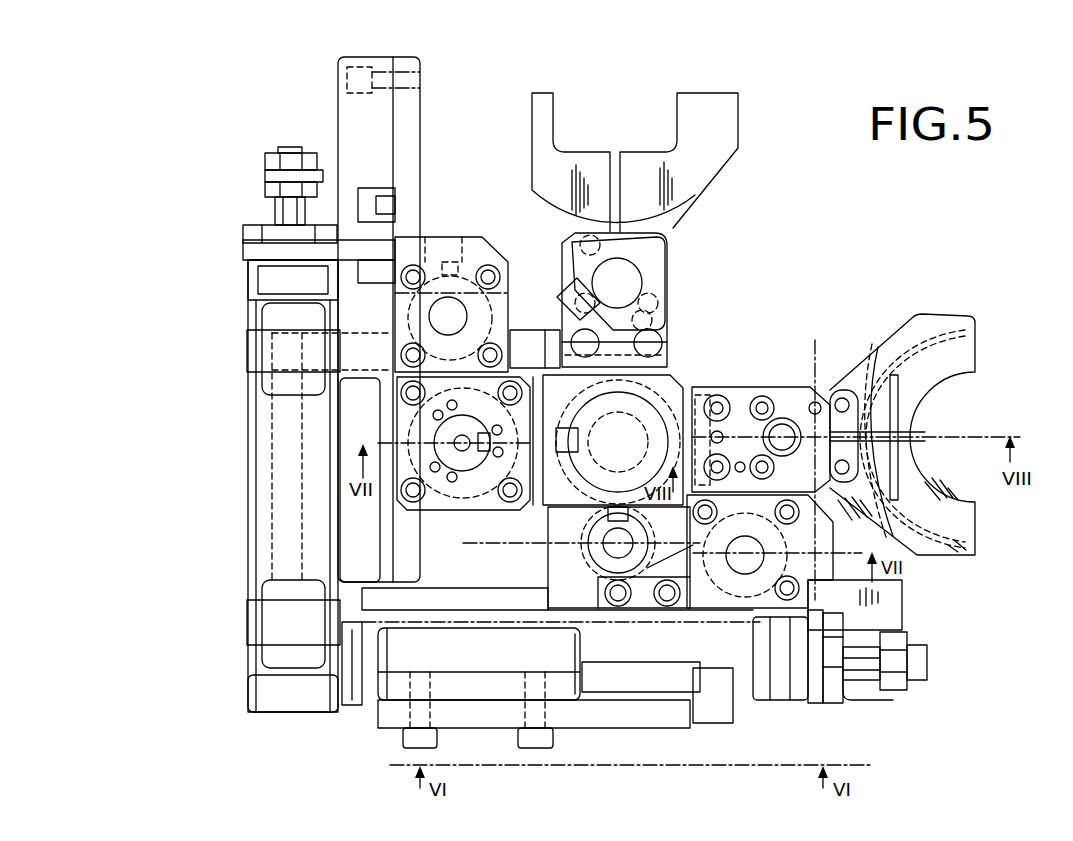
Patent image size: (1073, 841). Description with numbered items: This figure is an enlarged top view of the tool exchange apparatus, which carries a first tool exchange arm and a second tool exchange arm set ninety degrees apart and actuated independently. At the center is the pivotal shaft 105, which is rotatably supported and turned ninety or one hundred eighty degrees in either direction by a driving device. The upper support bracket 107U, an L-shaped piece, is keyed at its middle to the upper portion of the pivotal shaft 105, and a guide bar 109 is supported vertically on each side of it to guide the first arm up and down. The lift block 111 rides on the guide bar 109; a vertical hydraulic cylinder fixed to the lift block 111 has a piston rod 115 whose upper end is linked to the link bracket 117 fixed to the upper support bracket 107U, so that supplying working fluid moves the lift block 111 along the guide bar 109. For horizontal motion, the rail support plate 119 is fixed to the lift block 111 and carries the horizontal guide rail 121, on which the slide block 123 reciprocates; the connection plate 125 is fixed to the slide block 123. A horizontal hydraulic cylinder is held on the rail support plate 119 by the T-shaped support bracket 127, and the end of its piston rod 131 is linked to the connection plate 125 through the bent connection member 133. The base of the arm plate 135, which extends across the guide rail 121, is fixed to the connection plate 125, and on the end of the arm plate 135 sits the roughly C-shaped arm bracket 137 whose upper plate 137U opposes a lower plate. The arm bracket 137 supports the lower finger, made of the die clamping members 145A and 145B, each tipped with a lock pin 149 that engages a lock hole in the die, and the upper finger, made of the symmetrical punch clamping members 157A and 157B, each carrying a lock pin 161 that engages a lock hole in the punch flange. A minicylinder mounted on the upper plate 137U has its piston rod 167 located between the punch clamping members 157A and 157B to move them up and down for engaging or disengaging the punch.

The pivotal shaft 105 is at (652, 413).
The upper support bracket 107U is at (540, 495).
The guide bar 109 is at (460, 470).
The lift block 111 is at (548, 570).
The piston rod 115 is at (596, 435).
The link bracket 117 is at (428, 237).
The rail support plate 119 is at (902, 612).
The guide rail 121 is at (338, 105).
The slide block 123 is at (362, 385).
The connection plate 125 is at (635, 713).
The T-shaped support bracket 127 is at (252, 257).
The piston rod 131 is at (285, 215).
The connection member 133 is at (272, 178).
The arm plate 135 is at (533, 330).
The arm bracket 137 is at (770, 387).
The upper plate 137U is at (800, 387).
The die clamping member 145A is at (935, 548).
The die clamping member 145B is at (922, 320).
The lock pin 149 is at (978, 378).
The punch clamping member 157A is at (733, 133).
The punch clamping member 157B is at (513, 100).
The lock pin 161 is at (560, 102).
The piston rod 167 is at (782, 432).